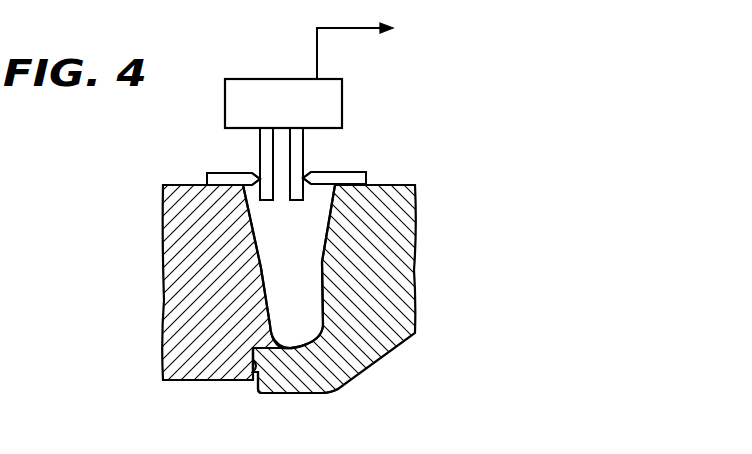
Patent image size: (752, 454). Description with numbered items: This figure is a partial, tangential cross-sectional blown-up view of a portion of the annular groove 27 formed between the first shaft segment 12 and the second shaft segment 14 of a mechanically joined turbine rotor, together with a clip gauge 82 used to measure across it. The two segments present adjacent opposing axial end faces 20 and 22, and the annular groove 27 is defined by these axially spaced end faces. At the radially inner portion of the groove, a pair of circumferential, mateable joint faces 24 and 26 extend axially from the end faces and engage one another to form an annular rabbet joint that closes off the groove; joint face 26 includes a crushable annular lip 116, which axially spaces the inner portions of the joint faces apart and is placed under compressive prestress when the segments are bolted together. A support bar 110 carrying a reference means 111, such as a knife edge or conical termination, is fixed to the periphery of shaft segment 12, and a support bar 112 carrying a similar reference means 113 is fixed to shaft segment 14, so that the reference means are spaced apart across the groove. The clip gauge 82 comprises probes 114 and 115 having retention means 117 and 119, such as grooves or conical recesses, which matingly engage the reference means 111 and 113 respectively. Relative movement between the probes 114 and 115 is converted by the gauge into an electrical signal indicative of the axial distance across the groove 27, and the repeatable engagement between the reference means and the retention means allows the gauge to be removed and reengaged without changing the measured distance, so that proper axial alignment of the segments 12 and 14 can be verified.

The first shaft segment 12 is at (163, 205).
The second shaft segment 14 is at (415, 200).
The end face 20 is at (262, 277).
The end face 22 is at (322, 270).
The joint face 24 is at (268, 334).
The joint face 26 is at (283, 349).
The annular groove 27 is at (311, 295).
The clip gauge 82 is at (342, 107).
The support bar 110 is at (207, 176).
The reference means 111 is at (258, 176).
The support bar 112 is at (366, 173).
The reference means 113 is at (306, 173).
The probe 114 is at (260, 140).
The probe 115 is at (303, 139).
The crushable annular lip 116 is at (262, 368).
The retention means 117 is at (278, 218).
The retention means 119 is at (312, 218).